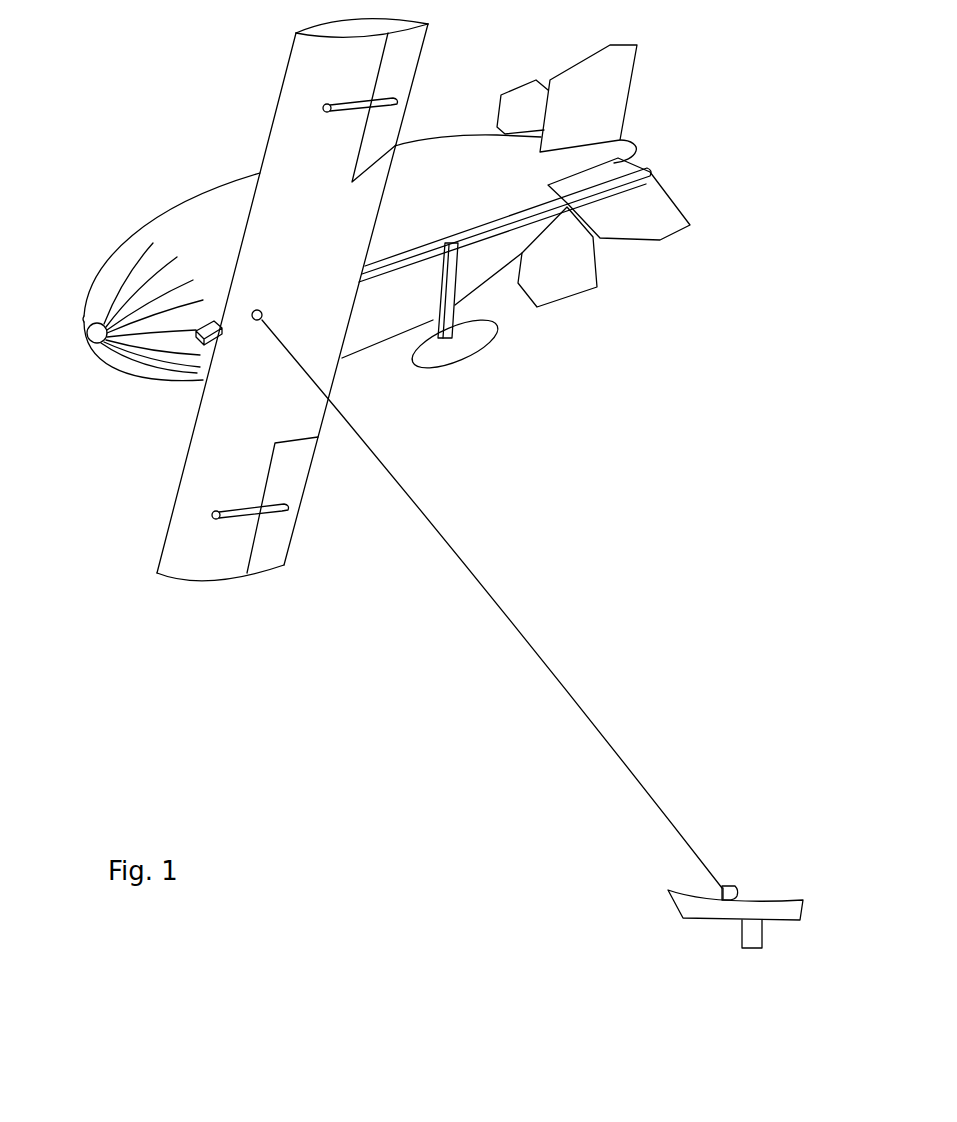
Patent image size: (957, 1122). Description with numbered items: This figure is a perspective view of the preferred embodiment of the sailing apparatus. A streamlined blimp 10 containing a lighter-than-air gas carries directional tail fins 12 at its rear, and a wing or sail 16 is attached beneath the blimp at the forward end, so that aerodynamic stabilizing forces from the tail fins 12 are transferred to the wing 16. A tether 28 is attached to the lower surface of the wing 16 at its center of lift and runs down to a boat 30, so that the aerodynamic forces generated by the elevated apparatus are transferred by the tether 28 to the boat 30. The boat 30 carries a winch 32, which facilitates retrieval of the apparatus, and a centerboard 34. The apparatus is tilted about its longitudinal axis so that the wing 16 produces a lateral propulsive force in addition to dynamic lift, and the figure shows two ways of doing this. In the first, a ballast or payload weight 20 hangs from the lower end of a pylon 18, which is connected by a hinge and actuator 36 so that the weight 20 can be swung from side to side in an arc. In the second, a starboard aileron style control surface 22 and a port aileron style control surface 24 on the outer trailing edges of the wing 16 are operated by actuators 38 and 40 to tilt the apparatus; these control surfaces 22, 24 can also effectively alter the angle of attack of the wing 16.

The blimp 10 is at (195, 237).
The directional tail fins 12 is at (602, 78).
The wing or sail 16 is at (308, 158).
The pylon 18 is at (452, 316).
The ballast or payload weight 20 is at (467, 345).
The starboard aileron style control surface 22 is at (268, 555).
The port aileron style control surface 24 is at (405, 59).
The tether 28 is at (494, 598).
The boat 30 is at (755, 910).
The winch 32 is at (731, 886).
The centerboard 34 is at (752, 933).
The hinge and actuator 36 is at (448, 242).
The actuator 38 is at (355, 102).
The actuator 40 is at (245, 512).